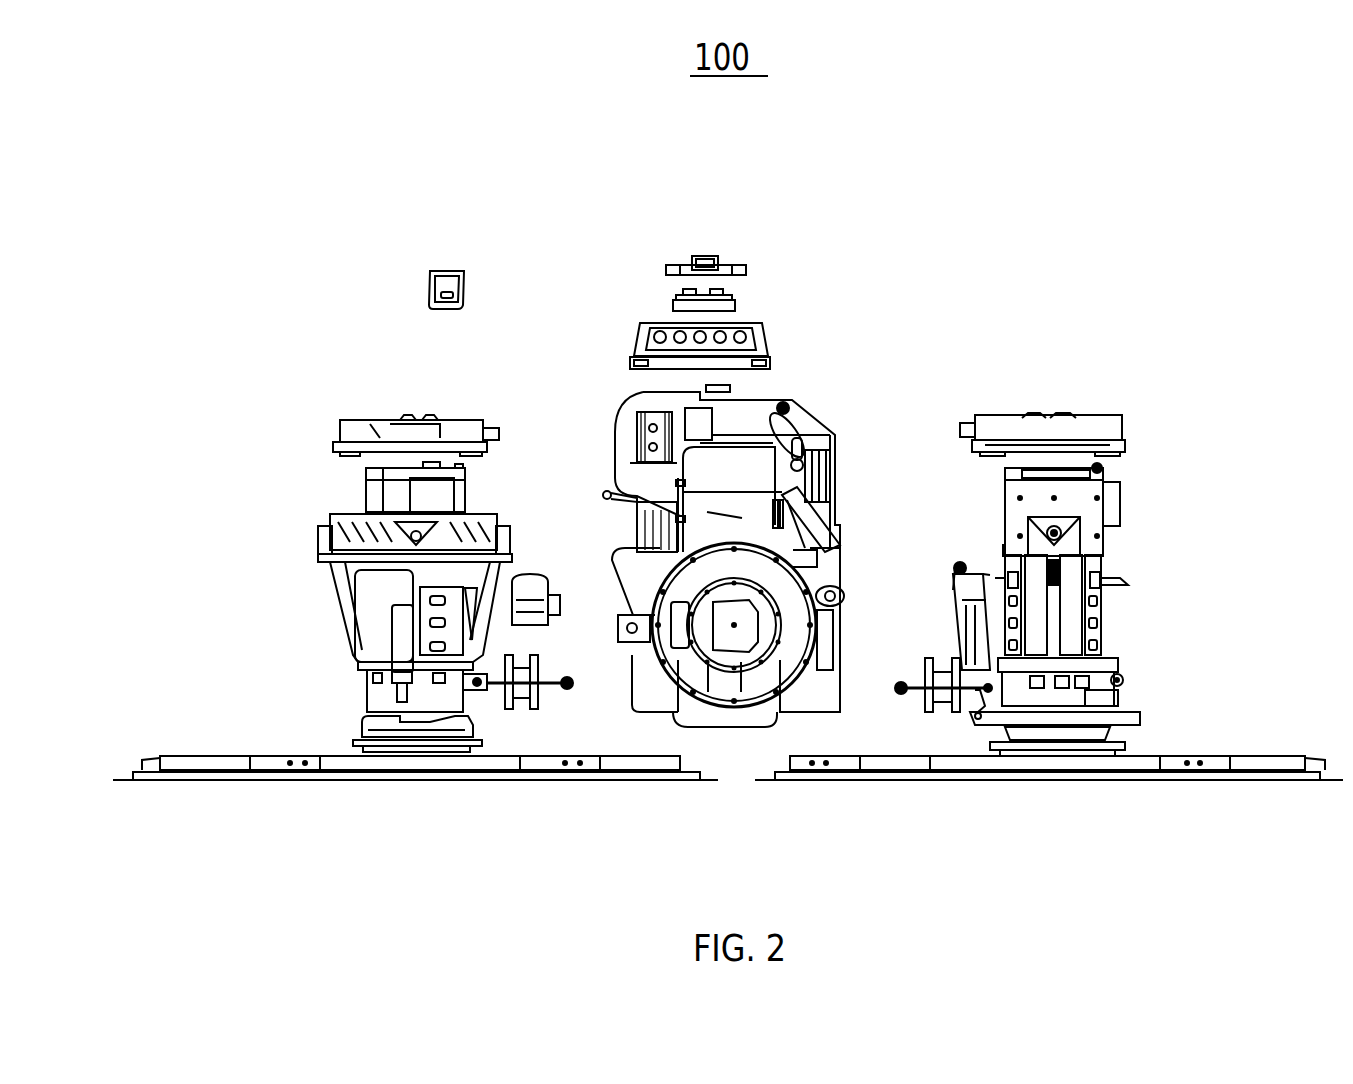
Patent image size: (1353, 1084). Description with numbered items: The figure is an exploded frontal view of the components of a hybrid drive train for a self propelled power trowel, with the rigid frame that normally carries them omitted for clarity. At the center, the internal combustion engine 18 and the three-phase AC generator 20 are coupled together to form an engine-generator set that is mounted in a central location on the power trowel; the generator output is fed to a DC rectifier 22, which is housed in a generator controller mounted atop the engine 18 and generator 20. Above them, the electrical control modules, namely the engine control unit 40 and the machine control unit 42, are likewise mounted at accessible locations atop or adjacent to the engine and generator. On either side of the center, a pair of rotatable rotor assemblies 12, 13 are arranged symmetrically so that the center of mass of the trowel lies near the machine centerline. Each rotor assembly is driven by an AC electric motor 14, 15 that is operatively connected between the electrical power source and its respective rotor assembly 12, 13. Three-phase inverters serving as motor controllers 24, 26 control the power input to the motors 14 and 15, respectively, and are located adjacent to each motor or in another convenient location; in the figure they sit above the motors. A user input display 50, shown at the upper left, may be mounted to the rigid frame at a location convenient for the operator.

The rotor assembly 12 is at (300, 622).
The rotor assembly 13 is at (1130, 628).
The electric motor 14 is at (375, 497).
The electric motor 15 is at (1000, 497).
The internal combustion engine 18 is at (795, 398).
The AC electrical generator 20 is at (750, 645).
The DC rectifier 22 is at (770, 340).
The motor controller 24 is at (390, 418).
The motor controller 26 is at (1055, 413).
The engine control unit 40 is at (745, 270).
The machine control unit 42 is at (675, 303).
The user input display 50 is at (428, 273).